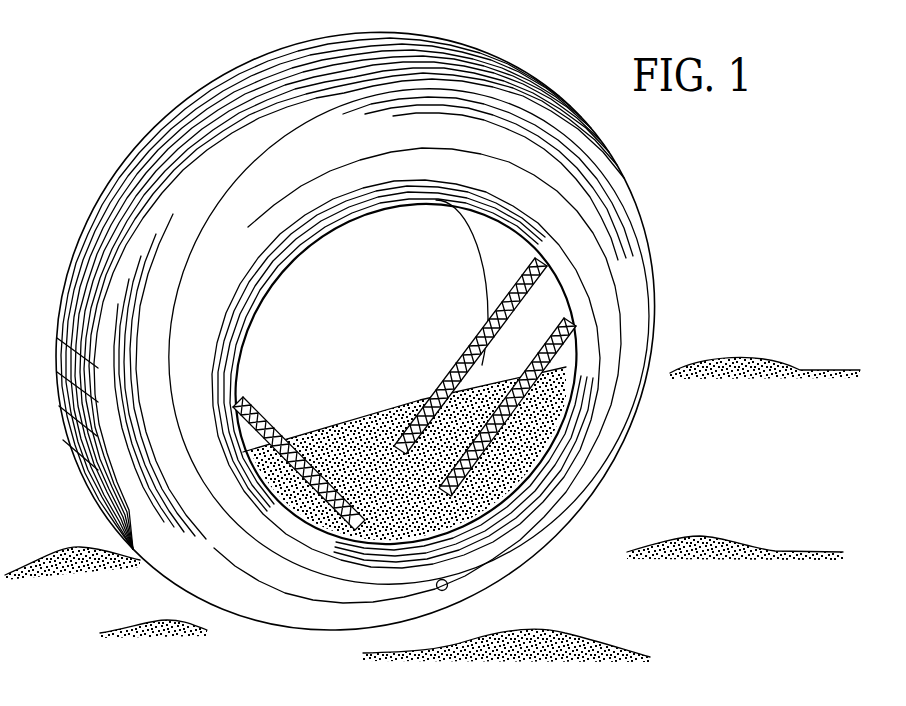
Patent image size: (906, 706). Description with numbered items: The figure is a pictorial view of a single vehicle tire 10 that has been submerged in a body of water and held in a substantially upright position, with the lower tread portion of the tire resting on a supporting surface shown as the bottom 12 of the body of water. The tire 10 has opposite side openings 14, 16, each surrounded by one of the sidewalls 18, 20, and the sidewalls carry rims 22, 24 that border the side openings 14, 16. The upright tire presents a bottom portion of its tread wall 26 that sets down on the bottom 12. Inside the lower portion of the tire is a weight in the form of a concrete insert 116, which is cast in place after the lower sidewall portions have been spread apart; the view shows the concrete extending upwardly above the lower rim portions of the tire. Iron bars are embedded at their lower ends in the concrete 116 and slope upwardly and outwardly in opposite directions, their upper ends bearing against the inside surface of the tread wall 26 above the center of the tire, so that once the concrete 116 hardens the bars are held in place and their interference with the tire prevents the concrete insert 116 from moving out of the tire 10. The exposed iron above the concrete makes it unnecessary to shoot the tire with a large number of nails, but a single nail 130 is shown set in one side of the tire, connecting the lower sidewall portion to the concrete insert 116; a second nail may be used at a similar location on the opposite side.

The vehicle tire 10 is at (389, 353).
The bottom of a body of water 12 is at (724, 444).
The side opening 14 is at (333, 250).
The side opening 16 is at (537, 257).
The sidewall 18 is at (503, 347).
The sidewall 20 is at (220, 232).
The rim 22 is at (474, 247).
The rim 24 is at (233, 392).
The tread wall 26 is at (120, 187).
The concrete insert 116 is at (327, 533).
The nail 130 is at (448, 583).